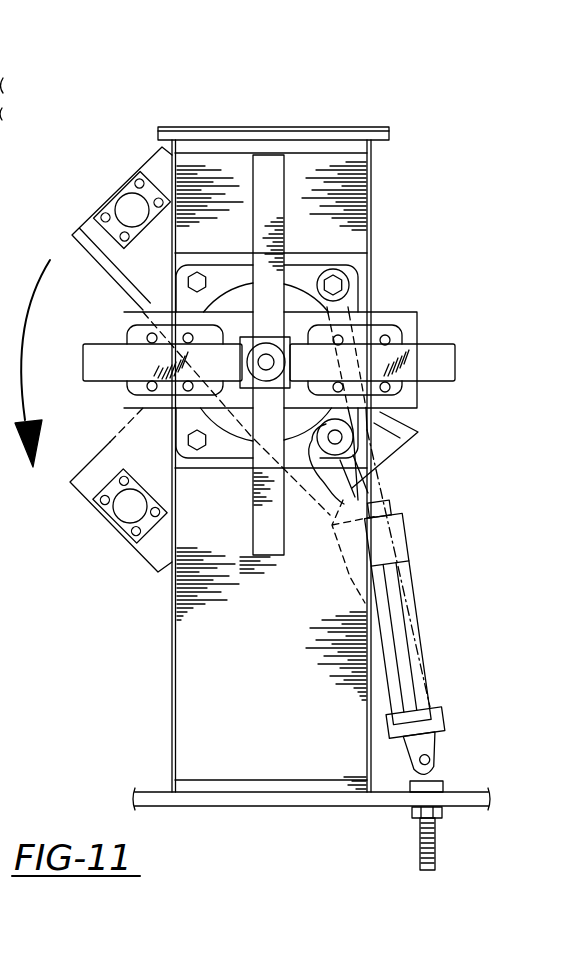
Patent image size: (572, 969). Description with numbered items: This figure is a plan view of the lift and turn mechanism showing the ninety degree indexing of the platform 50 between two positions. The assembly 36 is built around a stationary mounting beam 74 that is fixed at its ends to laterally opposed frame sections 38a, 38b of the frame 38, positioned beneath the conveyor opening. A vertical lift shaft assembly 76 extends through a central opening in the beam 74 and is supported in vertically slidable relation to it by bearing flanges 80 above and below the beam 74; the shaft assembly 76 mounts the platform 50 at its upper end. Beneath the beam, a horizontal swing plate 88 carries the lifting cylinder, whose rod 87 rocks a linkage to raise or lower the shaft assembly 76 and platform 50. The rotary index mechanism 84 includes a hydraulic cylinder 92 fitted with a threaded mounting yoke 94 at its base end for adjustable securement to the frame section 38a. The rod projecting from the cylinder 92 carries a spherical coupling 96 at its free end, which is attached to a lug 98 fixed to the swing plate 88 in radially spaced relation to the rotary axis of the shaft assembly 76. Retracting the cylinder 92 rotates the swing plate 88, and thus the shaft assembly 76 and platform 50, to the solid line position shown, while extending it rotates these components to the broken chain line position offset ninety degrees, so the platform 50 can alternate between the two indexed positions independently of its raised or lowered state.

The turret assembly 36 is at (470, 240).
The frame 38 is at (12, 86).
The frame section 38a is at (470, 792).
The frame section 38b is at (340, 128).
The platform 50 is at (444, 365).
The stationary mounting beam 74 is at (257, 714).
The vertical lift shaft assembly 76 is at (262, 360).
The bearing flanges 80 is at (185, 418).
The rotary index mechanism 84 is at (470, 593).
The rod 87 is at (362, 482).
The horizontal swing plate 88 is at (152, 165).
The hydraulic cylinder 92 is at (410, 677).
The threaded mounting yoke 94 is at (445, 775).
The spherical coupling 96 is at (352, 437).
The lug 98 is at (420, 422).